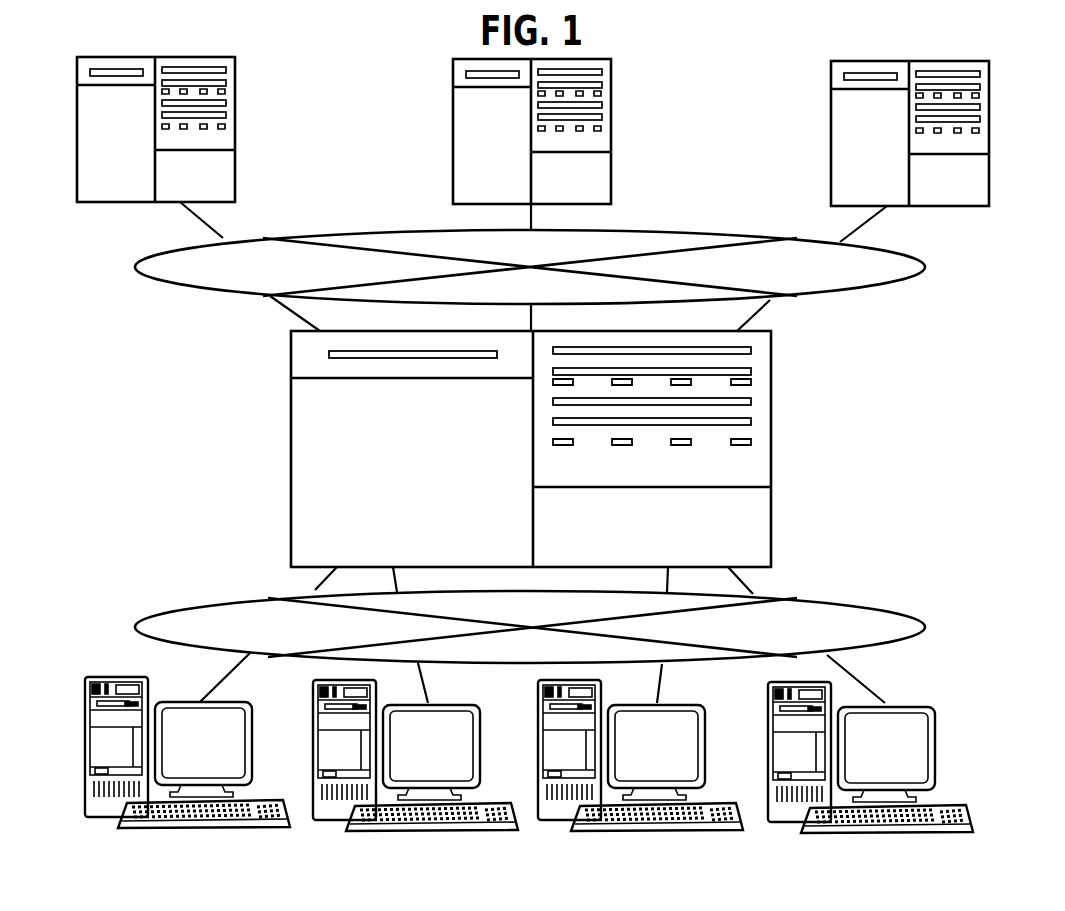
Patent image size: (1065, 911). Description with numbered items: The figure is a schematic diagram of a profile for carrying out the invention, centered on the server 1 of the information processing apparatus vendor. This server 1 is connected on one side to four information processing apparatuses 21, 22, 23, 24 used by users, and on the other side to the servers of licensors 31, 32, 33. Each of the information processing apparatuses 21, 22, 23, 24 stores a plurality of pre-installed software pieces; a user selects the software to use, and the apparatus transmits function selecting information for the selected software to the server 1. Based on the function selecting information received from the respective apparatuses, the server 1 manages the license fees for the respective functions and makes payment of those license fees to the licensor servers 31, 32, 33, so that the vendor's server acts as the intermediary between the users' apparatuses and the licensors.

The server 1 is at (771, 358).
The information processing apparatus 21 is at (85, 703).
The information processing apparatus 22 is at (313, 705).
The information processing apparatus 23 is at (538, 705).
The information processing apparatus 24 is at (768, 707).
The server of licensor 31 is at (235, 88).
The server of licensor 32 is at (611, 90).
The server of licensor 33 is at (989, 92).